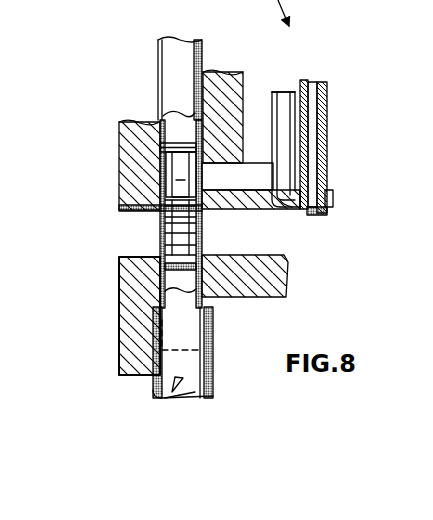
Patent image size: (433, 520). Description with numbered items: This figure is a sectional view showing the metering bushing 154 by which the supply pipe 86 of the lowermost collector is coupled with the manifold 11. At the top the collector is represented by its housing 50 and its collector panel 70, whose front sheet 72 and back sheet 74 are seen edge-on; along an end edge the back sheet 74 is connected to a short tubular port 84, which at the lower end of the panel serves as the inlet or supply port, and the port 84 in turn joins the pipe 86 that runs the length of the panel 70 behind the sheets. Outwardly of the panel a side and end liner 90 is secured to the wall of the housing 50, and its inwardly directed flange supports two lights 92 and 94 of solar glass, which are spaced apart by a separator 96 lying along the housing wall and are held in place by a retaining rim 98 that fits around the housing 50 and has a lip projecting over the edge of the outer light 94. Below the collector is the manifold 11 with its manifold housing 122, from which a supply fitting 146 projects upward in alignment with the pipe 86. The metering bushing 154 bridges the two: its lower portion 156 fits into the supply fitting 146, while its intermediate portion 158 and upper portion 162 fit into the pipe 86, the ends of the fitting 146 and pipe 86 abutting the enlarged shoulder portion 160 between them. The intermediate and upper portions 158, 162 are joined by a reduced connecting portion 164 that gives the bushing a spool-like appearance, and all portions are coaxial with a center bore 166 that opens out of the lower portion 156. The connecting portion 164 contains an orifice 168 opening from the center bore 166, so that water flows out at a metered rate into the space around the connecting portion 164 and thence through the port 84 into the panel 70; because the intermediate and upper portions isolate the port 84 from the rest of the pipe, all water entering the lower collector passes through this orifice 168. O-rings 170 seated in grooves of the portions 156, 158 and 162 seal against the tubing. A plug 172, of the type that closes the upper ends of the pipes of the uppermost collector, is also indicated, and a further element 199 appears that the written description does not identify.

The manifold 11 is at (116, 361).
The housing 50 is at (120, 127).
The collector panel 70 is at (283, 92).
The front sheet 72 is at (298, 111).
The back sheet 74 is at (272, 100).
The tubular port 84 is at (248, 175).
The pipe 86 is at (183, 65).
The side and end liner 90 is at (282, 207).
The light 92 is at (310, 142).
The light 94 is at (330, 167).
The separator 96 is at (315, 212).
The retaining rim 98 is at (333, 200).
The manifold housing 122 is at (122, 328).
The supply fitting 146 is at (213, 318).
The metering bushing 154 is at (242, 297).
The lower portion 156 is at (162, 262).
The intermediate portion 158 is at (204, 217).
The shoulder portion 160 is at (203, 235).
The upper portion 162 is at (172, 164).
The connecting portion 164 is at (176, 186).
The center bore 166 is at (162, 285).
The orifice 168 is at (160, 203).
The O-rings 170 is at (163, 215).
The plug 172 is at (163, 150).
The end cap 199 is at (167, 390).